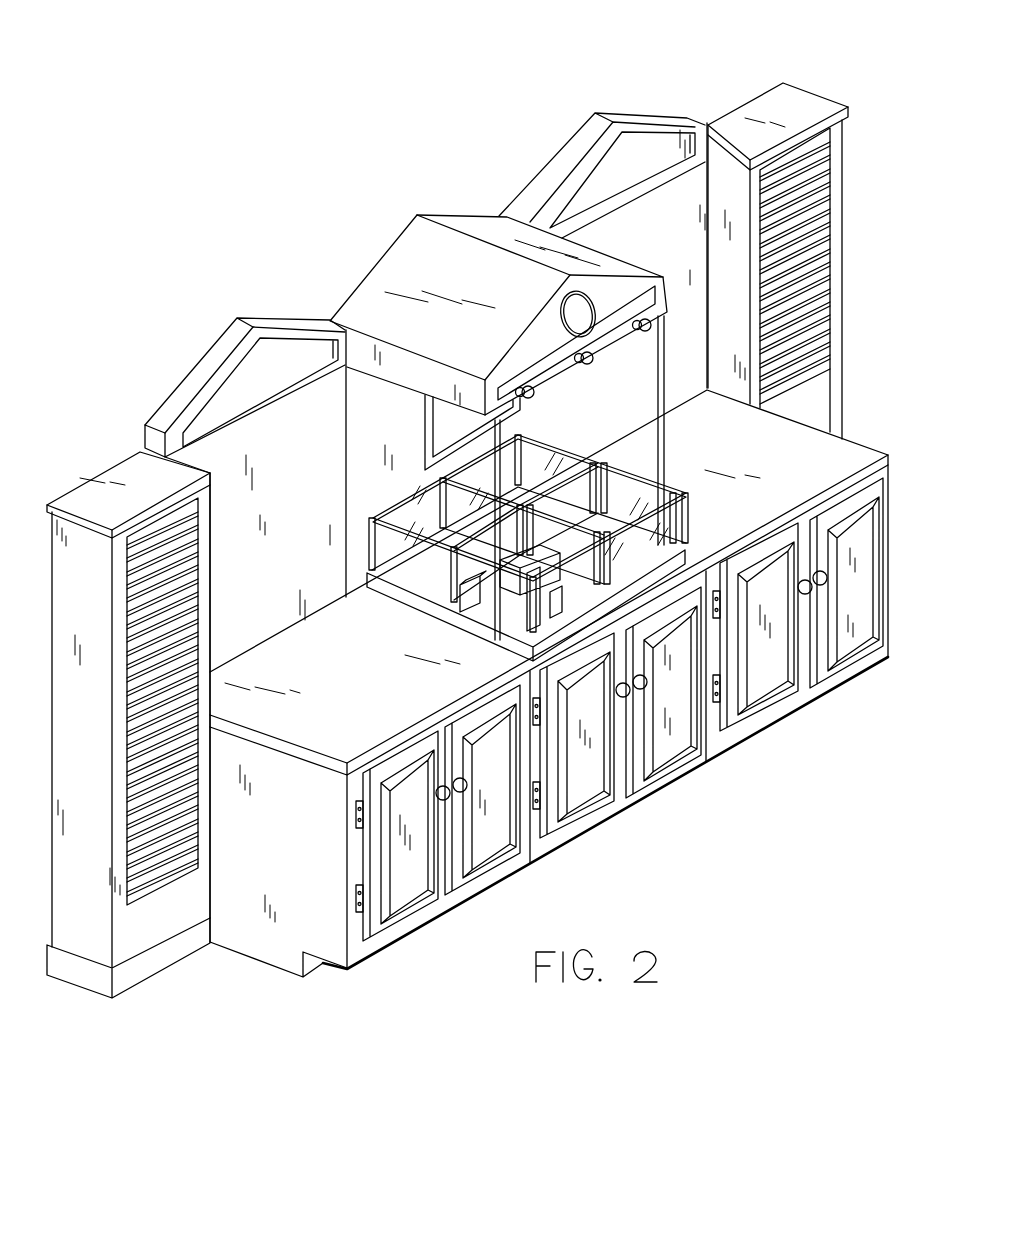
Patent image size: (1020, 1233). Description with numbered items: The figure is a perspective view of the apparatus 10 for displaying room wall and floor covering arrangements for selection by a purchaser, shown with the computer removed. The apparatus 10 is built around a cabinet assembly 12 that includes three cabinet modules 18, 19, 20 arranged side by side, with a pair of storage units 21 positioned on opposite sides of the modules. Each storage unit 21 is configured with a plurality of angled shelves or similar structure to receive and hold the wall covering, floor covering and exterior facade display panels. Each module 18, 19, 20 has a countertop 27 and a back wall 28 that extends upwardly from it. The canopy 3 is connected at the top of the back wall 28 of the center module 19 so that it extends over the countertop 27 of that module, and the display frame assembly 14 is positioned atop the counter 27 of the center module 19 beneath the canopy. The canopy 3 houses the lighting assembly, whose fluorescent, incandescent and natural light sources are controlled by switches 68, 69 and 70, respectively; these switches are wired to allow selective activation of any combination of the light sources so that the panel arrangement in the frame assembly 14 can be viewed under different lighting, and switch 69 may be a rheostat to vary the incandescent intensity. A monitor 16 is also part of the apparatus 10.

The apparatus 10 is at (428, 93).
The cabinet assembly 12 is at (279, 990).
The display frame assembly 14 is at (404, 570).
The monitor 16 is at (423, 410).
The cabinet module 18 is at (483, 893).
The center cabinet module 19 is at (680, 780).
The cabinet module 20 is at (848, 687).
The storage unit 21 is at (72, 490).
The countertop 27 is at (325, 745).
The back wall 28 is at (262, 442).
The canopy 3 is at (397, 238).
The switch 68 is at (535, 394).
The switch 69 is at (594, 358).
The switch 70 is at (652, 325).